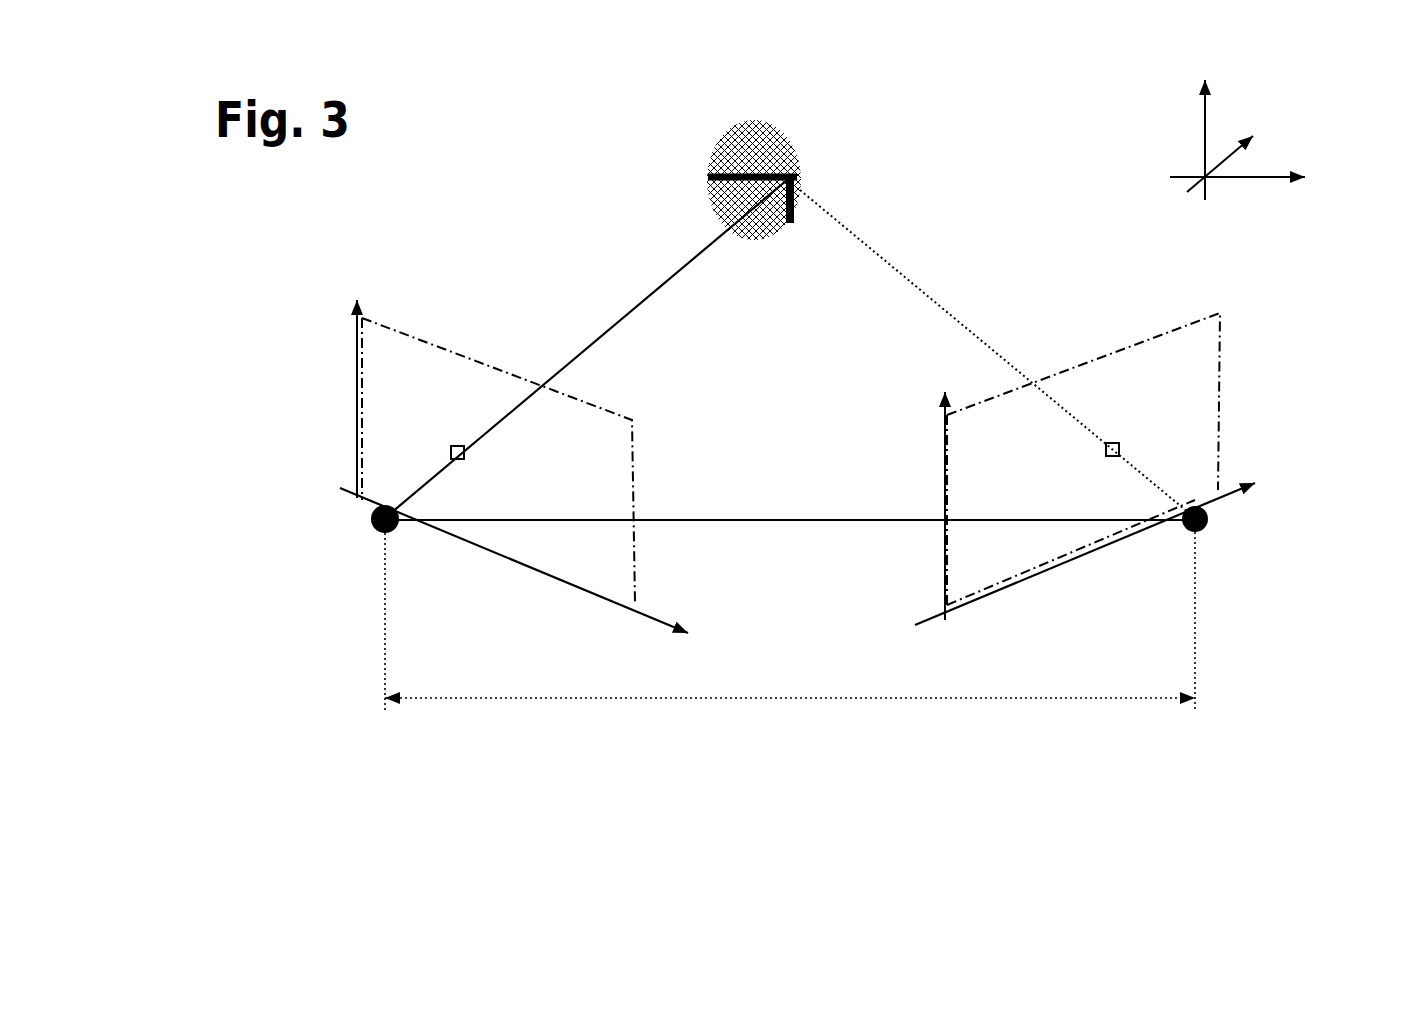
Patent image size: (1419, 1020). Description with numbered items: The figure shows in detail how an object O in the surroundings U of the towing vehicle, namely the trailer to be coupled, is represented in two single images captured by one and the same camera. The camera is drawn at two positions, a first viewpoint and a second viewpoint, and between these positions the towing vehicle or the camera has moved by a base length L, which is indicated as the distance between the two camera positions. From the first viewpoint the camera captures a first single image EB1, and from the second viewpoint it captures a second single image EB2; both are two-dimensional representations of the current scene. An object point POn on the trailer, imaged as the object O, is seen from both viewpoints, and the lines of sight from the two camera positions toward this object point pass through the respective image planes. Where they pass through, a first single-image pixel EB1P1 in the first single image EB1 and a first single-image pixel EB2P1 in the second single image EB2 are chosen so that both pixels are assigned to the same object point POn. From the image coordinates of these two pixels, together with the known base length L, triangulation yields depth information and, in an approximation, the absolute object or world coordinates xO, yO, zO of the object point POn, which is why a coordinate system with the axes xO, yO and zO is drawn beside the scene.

The surroundings U is at (1060, 95).
The object O is at (738, 137).
The object point POn is at (793, 167).
The object coordinate zO is at (1238, 100).
The object coordinate yO is at (1268, 132).
The object coordinate xO is at (1267, 208).
The first single image EB1 is at (438, 335).
The first single-image pixel EB1P1 is at (462, 442).
The second single image EB2 is at (1228, 438).
The first single-image pixel of second single image EB2P1 is at (1097, 448).
The base length L is at (738, 700).